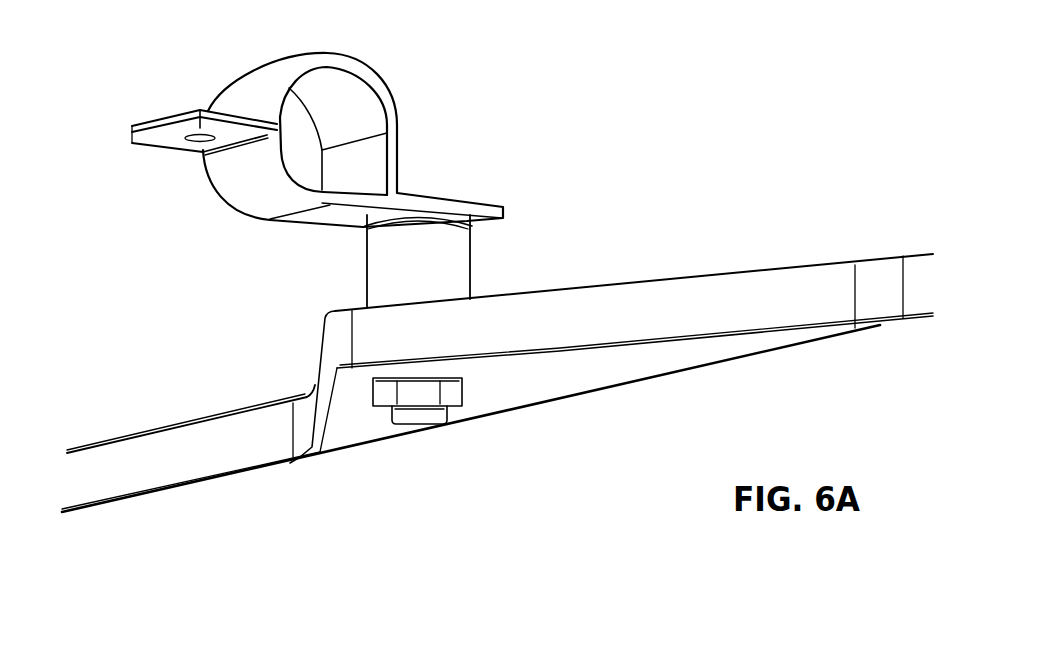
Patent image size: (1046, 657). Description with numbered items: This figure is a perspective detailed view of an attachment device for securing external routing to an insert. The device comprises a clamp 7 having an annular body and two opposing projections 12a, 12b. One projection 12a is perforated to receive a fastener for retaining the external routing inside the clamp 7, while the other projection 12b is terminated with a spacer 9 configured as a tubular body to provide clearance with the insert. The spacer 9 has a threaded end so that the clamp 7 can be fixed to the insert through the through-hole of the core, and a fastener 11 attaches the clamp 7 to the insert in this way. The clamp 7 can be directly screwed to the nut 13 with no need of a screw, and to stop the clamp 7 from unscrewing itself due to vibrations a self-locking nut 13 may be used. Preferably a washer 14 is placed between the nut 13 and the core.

The clamp 7 is at (357, 102).
The spacer 9 is at (449, 267).
The fastener 11 is at (467, 418).
The projection 12a is at (155, 115).
The projection 12b is at (448, 192).
The nut 13 is at (455, 398).
The washer 14 is at (465, 375).